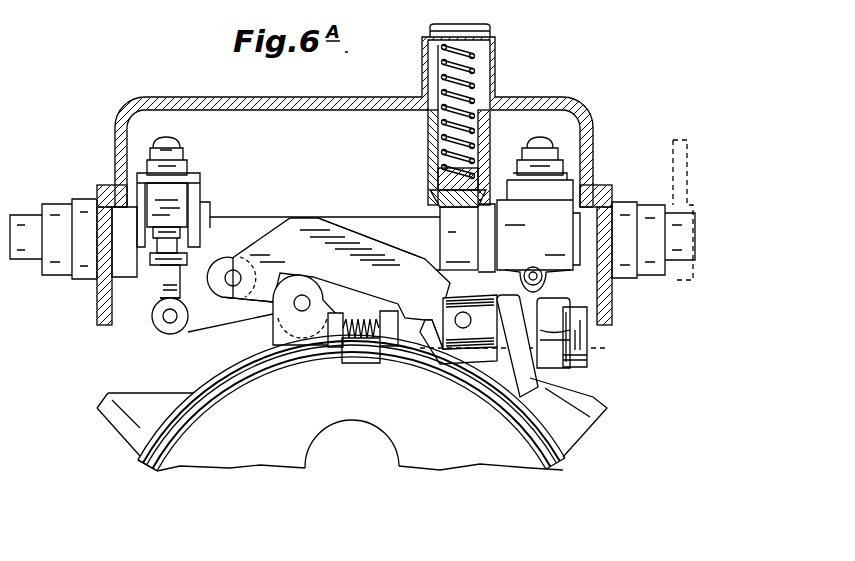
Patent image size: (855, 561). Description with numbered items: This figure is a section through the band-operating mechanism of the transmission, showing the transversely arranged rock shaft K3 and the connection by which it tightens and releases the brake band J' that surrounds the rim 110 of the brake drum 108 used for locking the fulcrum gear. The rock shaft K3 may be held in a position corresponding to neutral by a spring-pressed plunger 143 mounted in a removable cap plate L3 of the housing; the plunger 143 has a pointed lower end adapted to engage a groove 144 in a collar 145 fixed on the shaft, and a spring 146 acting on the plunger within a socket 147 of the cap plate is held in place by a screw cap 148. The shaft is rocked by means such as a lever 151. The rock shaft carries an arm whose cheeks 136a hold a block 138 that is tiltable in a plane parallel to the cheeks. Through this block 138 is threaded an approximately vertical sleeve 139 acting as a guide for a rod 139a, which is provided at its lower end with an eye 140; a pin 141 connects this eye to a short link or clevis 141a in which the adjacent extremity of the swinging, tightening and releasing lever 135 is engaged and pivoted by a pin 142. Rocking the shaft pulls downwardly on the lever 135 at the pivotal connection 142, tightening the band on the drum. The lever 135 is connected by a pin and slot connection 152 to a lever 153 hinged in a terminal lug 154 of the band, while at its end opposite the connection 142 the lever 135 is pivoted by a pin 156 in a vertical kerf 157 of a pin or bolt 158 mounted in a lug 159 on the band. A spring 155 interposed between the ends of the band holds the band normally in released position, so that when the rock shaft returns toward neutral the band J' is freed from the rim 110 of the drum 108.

The removable cap plate L3 is at (583, 107).
The screw cap 148 is at (492, 30).
The socket 147 is at (442, 80).
The spring 146 is at (442, 125).
The spring-pressed plunger 143 is at (440, 174).
The groove 144 is at (440, 199).
The collar 145 is at (452, 229).
The lever 151 is at (685, 157).
The cheeks 136a is at (127, 183).
The sleeve 139 is at (190, 178).
The block 138 is at (180, 203).
The rod 139a is at (163, 247).
The eye 140 is at (167, 272).
The pin 141 is at (165, 283).
The short link or clevis 141a is at (152, 302).
The pin 142 is at (168, 318).
The swinging, tightening and releasing lever 135 is at (305, 229).
The rock shaft K3 is at (362, 224).
The lever 153 is at (268, 315).
The pin and slot connection 152 is at (236, 270).
The terminal lug 154 is at (318, 299).
The pin or bolt 158 is at (480, 343).
The pin 156 is at (458, 303).
The vertical kerf 157 is at (458, 318).
The lug 159 is at (572, 348).
The spring 155 is at (357, 350).
The brake drum 108 is at (260, 458).
The rim 110 is at (253, 393).
The brake band J' is at (127, 465).